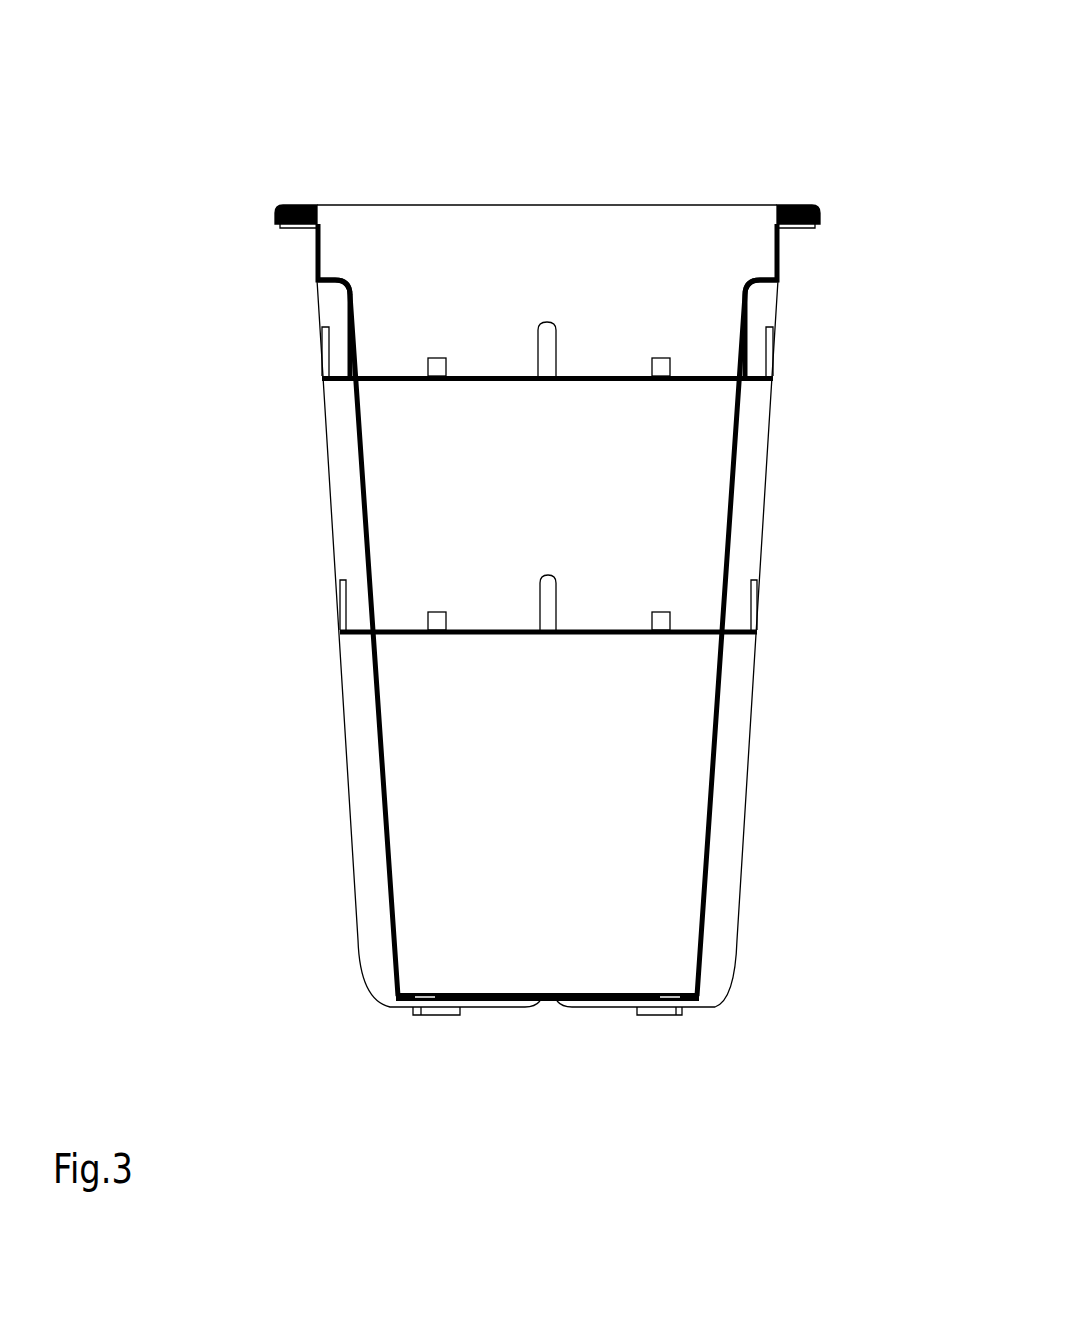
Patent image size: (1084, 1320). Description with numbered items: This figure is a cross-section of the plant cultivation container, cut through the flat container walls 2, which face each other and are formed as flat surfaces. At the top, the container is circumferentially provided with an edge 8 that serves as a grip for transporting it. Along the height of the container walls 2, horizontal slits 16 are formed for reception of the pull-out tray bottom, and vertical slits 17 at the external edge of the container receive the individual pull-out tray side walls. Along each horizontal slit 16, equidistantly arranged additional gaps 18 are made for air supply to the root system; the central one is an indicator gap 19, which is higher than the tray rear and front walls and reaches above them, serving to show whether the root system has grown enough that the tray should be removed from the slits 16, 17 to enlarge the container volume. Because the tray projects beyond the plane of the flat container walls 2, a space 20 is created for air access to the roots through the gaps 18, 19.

The container wall 2 is at (424, 254).
The edge 8 is at (826, 213).
The horizontal slit 16 is at (619, 636).
The vertical slit 17 is at (776, 350).
The additional gap 18 is at (436, 614).
The indicator gap 19 is at (544, 348).
The space 20 is at (763, 316).